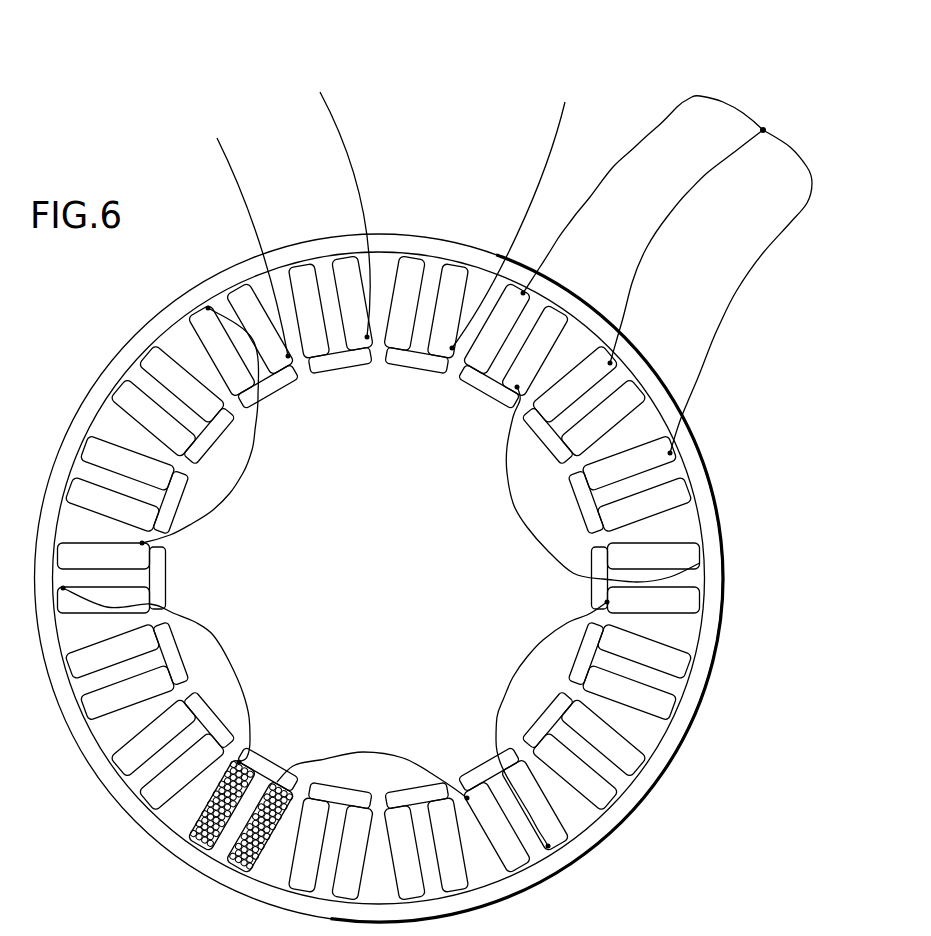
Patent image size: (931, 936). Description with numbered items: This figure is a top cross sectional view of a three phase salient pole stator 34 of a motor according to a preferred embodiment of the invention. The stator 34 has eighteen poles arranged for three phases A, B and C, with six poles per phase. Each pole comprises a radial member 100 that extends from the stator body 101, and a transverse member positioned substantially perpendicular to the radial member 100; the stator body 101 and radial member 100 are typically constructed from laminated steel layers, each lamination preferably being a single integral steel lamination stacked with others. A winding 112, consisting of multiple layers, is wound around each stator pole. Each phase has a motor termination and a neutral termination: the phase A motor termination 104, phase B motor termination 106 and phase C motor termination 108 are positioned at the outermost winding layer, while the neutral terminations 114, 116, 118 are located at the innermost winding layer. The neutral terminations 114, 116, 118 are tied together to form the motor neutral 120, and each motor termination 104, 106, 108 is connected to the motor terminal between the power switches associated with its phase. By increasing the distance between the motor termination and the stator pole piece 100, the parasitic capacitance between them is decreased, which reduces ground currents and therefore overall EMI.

The salient pole stator 34 is at (555, 282).
The radial member 100 is at (428, 280).
The stator body 101 is at (470, 255).
The phase A motor termination 104 is at (499, 428).
The phase B motor termination 106 is at (577, 148).
The phase C motor termination 108 is at (323, 163).
The winding 112 is at (405, 280).
The neutral termination 114 is at (637, 145).
The neutral termination 116 is at (687, 195).
The neutral termination 118 is at (737, 292).
The motor neutral 120 is at (786, 112).